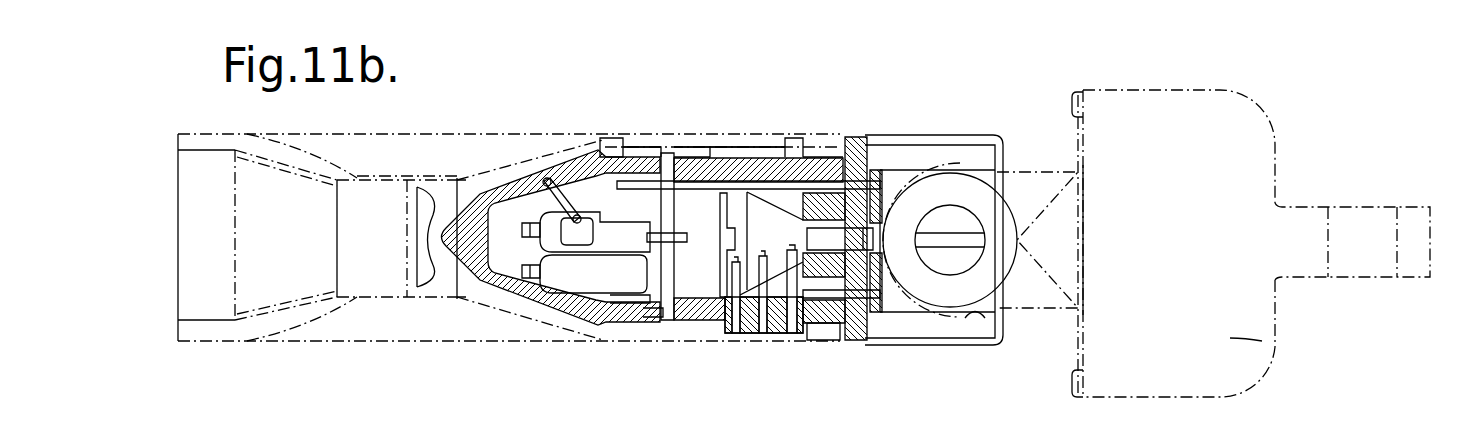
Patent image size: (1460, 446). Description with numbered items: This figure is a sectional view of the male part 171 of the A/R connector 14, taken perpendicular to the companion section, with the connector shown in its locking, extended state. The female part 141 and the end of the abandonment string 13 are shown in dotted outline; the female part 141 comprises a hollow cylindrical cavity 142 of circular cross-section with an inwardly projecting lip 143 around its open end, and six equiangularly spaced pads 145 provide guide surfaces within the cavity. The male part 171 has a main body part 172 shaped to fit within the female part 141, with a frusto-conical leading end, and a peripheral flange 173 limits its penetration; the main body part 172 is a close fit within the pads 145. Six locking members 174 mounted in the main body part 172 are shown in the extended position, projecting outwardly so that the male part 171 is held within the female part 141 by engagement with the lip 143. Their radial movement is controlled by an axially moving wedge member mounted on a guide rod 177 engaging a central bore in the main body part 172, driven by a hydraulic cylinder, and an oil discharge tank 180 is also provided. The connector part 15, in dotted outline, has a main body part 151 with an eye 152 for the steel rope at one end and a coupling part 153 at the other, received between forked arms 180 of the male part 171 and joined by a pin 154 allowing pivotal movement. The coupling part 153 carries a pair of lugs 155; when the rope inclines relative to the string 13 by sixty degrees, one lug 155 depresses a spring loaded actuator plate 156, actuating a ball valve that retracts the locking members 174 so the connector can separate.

The abandonment string 13 is at (212, 332).
The A/R connector 14 is at (858, 366).
The connector part 15 is at (1278, 159).
The female part 141 is at (513, 313).
The hollow cylindrical cavity 142 is at (787, 150).
The inwardly projecting lip 143 is at (822, 328).
The pads 145 is at (668, 150).
The main body part 151 is at (1262, 341).
The eye 152 is at (1347, 220).
The coupling part 153 is at (980, 280).
The pin 154 is at (958, 220).
The lugs 155 is at (957, 155).
The spring loaded actuator plate 156 is at (890, 285).
The male part 171 is at (733, 152).
The main body part 172 is at (707, 325).
The peripheral flange 173 is at (867, 328).
The locking members 174 is at (780, 325).
The guide rod 177 is at (858, 230).
The oil discharge tank 180 is at (975, 320).